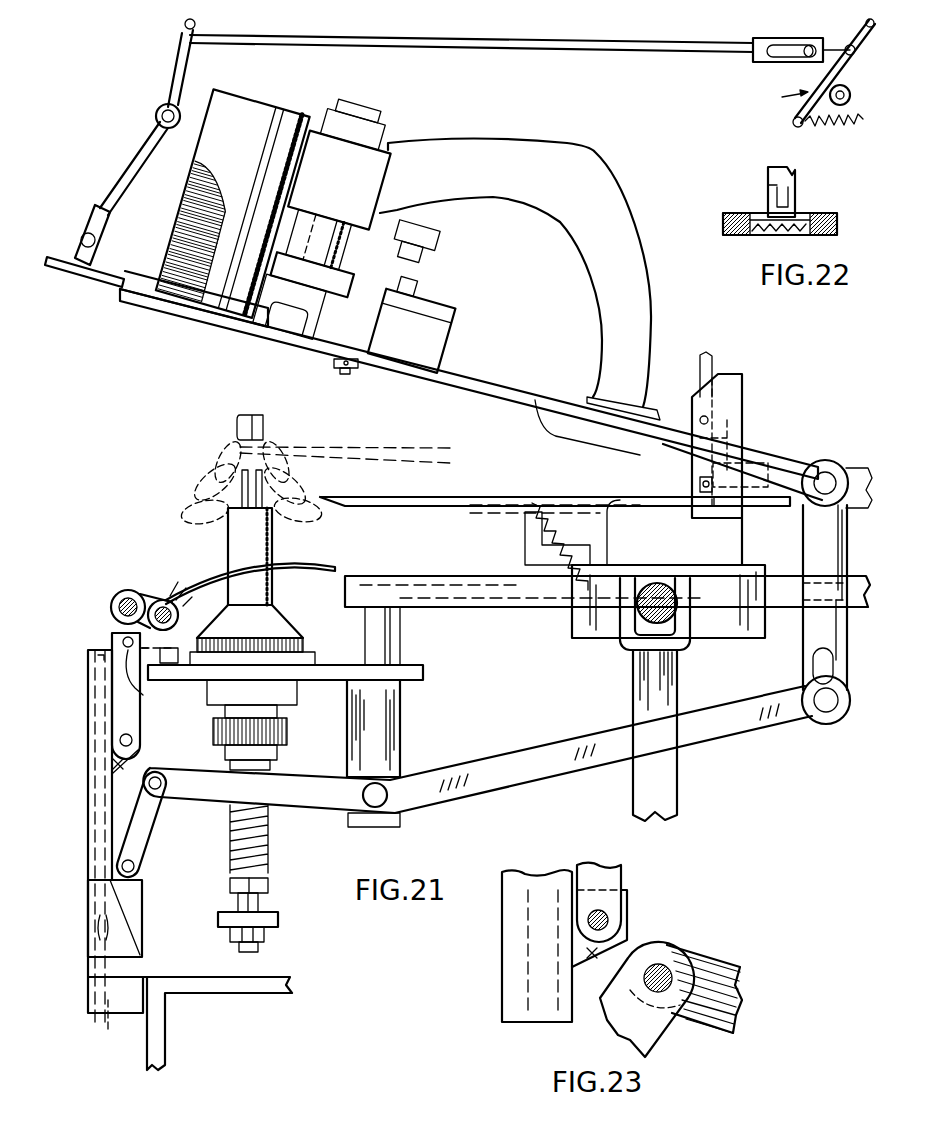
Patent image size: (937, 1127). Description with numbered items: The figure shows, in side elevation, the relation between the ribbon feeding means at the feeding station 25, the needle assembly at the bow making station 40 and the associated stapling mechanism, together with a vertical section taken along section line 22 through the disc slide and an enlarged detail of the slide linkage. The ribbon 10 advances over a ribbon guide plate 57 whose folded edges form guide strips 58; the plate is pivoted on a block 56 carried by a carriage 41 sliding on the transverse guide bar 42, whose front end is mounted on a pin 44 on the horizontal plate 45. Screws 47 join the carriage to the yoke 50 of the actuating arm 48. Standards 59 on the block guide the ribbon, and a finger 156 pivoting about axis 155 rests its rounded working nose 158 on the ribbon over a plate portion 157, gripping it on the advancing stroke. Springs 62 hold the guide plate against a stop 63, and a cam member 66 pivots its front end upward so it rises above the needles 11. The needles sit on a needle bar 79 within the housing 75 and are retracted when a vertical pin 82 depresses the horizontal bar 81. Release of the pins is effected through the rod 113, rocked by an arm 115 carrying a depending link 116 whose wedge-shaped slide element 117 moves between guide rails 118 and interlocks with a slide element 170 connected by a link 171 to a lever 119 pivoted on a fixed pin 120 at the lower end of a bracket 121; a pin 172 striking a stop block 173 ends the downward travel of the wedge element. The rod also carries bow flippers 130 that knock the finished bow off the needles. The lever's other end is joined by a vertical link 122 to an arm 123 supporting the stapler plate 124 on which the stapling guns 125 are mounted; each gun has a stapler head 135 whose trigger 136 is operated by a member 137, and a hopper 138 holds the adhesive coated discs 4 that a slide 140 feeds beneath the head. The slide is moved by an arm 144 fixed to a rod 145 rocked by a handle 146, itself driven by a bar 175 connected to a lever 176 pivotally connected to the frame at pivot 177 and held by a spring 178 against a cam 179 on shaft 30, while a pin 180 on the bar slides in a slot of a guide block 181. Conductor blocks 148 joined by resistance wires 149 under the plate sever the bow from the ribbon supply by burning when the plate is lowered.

In FIG. 21, the adhesive coated disc 4 is at (183, 188).
In FIG. 21, the ribbon 10 is at (343, 507).
In FIG. 21, the needles 11 is at (220, 467).
In FIG. 21, the section line 22 is at (100, 372).
In FIG. 21, the feeding station 25 is at (473, 457).
In FIG. 21, the shaft 30 is at (852, 97).
In FIG. 21, the bow making station 40 is at (172, 510).
In FIG. 21, the carriage 41 is at (700, 630).
In FIG. 21, the transverse guide bar 42 is at (500, 587).
In FIG. 21, the pin 44 is at (398, 648).
In FIG. 21, the horizontal plate 45 is at (425, 670).
In FIG. 21, the screws 47 is at (670, 602).
In FIG. 21, the actuating arm 48 is at (650, 670).
In FIG. 21, the yoke 50 is at (633, 643).
In FIG. 21, the block 56 is at (710, 548).
In FIG. 21, the ribbon guide plate 57 is at (377, 443).
In FIG. 21, the guide strips 58 is at (575, 497).
In FIG. 21, the standards 59 is at (733, 430).
In FIG. 21, the springs 62 is at (570, 553).
In FIG. 21, the stop 63 is at (525, 542).
In FIG. 21, the cam member 66 is at (747, 487).
In FIG. 21, the housing 75 is at (260, 545).
In FIG. 21, the needle bar 79 is at (258, 952).
In FIG. 21, the horizontal bar 81 is at (278, 915).
In FIG. 21, the vertical pin 82 is at (265, 418).
In FIG. 21, the rod 113 is at (165, 600).
In FIG. 21, the arm 115 is at (134, 594).
In FIG. 21, the depending link 116 is at (117, 640).
In FIG. 23, the depending link 116 is at (613, 906).
In FIG. 21, the wedge-shaped slide element 117 is at (117, 770).
In FIG. 23, the wedge-shaped slide element 117 is at (592, 956).
In FIG. 21, the guide rails 118 is at (97, 733).
In FIG. 23, the guide rails 118 is at (546, 1005).
In FIG. 21, the lever 119 is at (263, 799).
In FIG. 23, the lever 119 is at (724, 968).
In FIG. 21, the fixed pin 120 is at (388, 806).
In FIG. 21, the bracket 121 is at (400, 733).
In FIG. 21, the vertical link 122 is at (815, 644).
In FIG. 21, the arm 123 is at (793, 467).
In FIG. 21, the stapler plate 124 is at (527, 393).
In FIG. 21, the stapling guns 125 is at (517, 157).
In FIG. 21, the bow flippers 130 is at (296, 572).
In FIG. 21, the stapler head 135 is at (352, 189).
In FIG. 21, the trigger 136 is at (417, 262).
In FIG. 21, the member 137 is at (414, 286).
In FIG. 21, the hopper 138 is at (254, 117).
In FIG. 21, the slide 140 is at (62, 275).
In FIG. 22, the slide 140 is at (820, 212).
In FIG. 21, the arm 144 is at (113, 187).
In FIG. 22, the arm 144 is at (797, 183).
In FIG. 21, the rod 145 is at (160, 108).
In FIG. 21, the handle 146 is at (185, 24).
In FIG. 21, the conductor blocks 148 is at (356, 368).
In FIG. 21, the resistance wires 149 is at (346, 366).
In FIG. 21, the axis 155 is at (710, 420).
In FIG. 21, the finger 156 is at (712, 366).
In FIG. 21, the plate portion 157 is at (700, 505).
In FIG. 21, the working nose 158 is at (688, 488).
In FIG. 21, the slide element 170 is at (137, 913).
In FIG. 21, the link 171 is at (152, 817).
In FIG. 23, the link 171 is at (645, 1023).
In FIG. 21, the pin 172 is at (143, 690).
In FIG. 21, the stop block 173 is at (123, 638).
In FIG. 21, the bar 175 is at (474, 48).
In FIG. 21, the lever 176 is at (857, 33).
In FIG. 21, the pivot 177 is at (872, 28).
In FIG. 21, the spring 178 is at (865, 123).
In FIG. 21, the cam 179 is at (850, 90).
In FIG. 21, the pin 180 is at (808, 44).
In FIG. 21, the guide block 181 is at (772, 40).